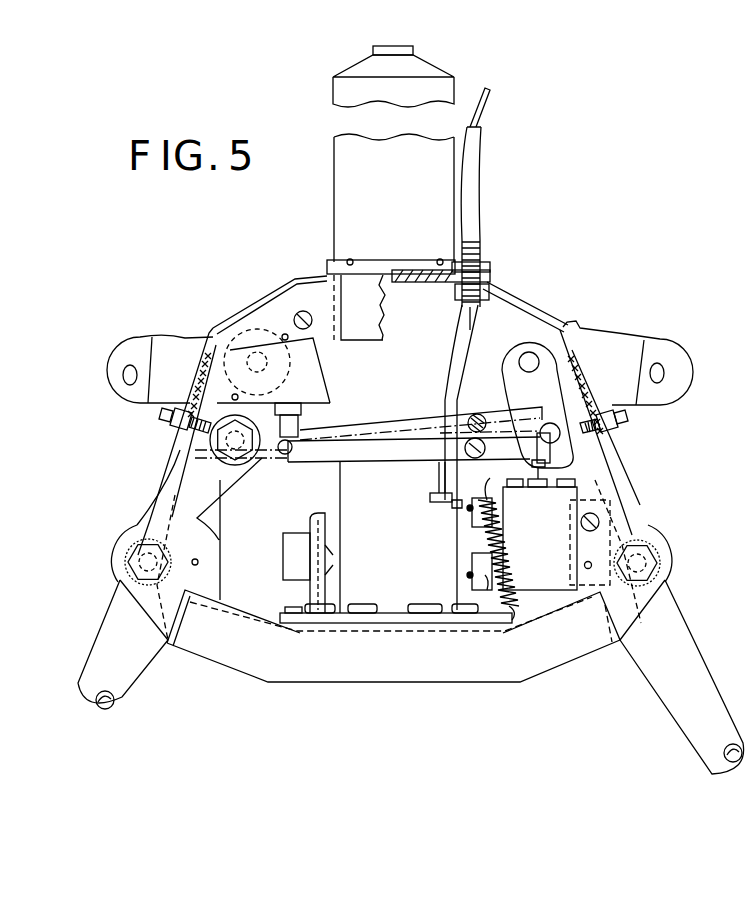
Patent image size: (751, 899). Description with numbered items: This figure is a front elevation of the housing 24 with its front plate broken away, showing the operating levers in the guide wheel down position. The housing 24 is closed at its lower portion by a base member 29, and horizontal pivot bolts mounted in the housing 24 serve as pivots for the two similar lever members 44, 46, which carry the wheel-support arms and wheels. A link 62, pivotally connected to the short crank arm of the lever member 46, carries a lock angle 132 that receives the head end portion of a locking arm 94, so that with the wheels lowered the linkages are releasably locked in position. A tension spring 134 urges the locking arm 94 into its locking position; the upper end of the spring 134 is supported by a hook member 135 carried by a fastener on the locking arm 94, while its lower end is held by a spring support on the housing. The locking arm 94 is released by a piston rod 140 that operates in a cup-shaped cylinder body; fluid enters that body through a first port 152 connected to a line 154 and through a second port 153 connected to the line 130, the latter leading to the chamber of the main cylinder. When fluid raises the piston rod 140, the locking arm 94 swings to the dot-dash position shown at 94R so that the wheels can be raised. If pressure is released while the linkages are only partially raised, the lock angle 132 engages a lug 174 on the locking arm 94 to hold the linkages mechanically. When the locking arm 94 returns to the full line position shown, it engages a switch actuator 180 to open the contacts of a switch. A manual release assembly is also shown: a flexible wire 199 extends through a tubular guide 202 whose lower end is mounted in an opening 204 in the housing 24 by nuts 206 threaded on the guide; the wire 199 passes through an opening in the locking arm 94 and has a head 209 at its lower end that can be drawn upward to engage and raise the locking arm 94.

The housing 24 is at (172, 444).
The base member 29 is at (367, 668).
The lever member 44 is at (108, 606).
The lever member 46 is at (657, 680).
The link 62 is at (518, 387).
The locking arm 94 is at (392, 455).
The released position of locking arm 94R is at (428, 415).
The line 130 is at (462, 533).
The lock angle 132 is at (573, 440).
The tension spring 134 is at (504, 534).
The hook member 135 is at (468, 510).
The piston rod 140 is at (573, 463).
The first port 152 is at (484, 578).
The second port 153 is at (470, 550).
The line 154 is at (470, 580).
The lug 174 is at (432, 485).
The switch actuator 180 is at (290, 430).
The flexible wire 199 is at (515, 306).
The tubular guide 202 is at (473, 196).
The opening 204 is at (492, 290).
The nuts 206 is at (478, 258).
The head 209 is at (460, 498).